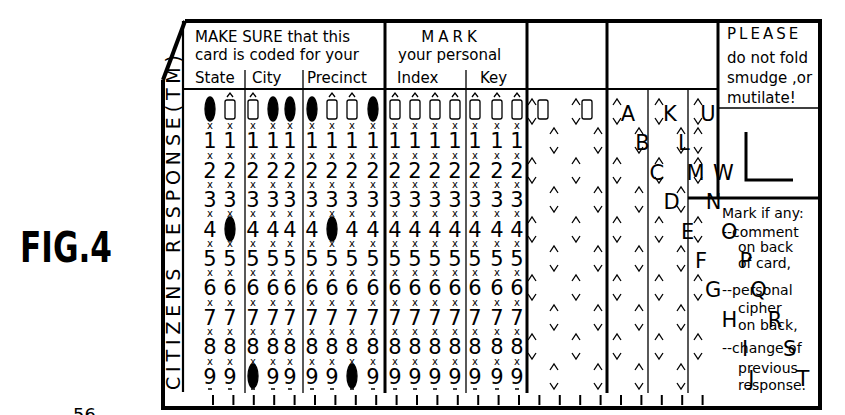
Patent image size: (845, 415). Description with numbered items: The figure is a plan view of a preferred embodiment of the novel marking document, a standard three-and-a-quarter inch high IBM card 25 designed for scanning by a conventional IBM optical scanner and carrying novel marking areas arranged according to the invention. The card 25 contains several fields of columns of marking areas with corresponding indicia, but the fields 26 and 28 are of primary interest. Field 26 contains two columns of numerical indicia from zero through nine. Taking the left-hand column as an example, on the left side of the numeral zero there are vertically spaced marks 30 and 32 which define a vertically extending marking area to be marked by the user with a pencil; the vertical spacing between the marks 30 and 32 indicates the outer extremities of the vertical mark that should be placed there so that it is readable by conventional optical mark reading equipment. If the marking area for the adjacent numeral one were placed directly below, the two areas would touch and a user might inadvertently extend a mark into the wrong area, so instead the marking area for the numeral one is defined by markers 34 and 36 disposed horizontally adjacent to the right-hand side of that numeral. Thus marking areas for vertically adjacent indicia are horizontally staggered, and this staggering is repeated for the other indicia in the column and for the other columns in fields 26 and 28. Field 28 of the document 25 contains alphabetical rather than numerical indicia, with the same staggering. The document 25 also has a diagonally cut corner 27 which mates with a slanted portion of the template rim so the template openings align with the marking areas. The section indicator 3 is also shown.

The section line direction 3 is at (57, 17).
The card 25 is at (162, 142).
The diagonally cut corner 27 is at (173, 47).
The field 26 is at (536, 32).
The field 28 is at (697, 37).
The mark 30 is at (531, 96).
The mark 32 is at (518, 117).
The marker 34 is at (560, 128).
The marker 36 is at (565, 150).